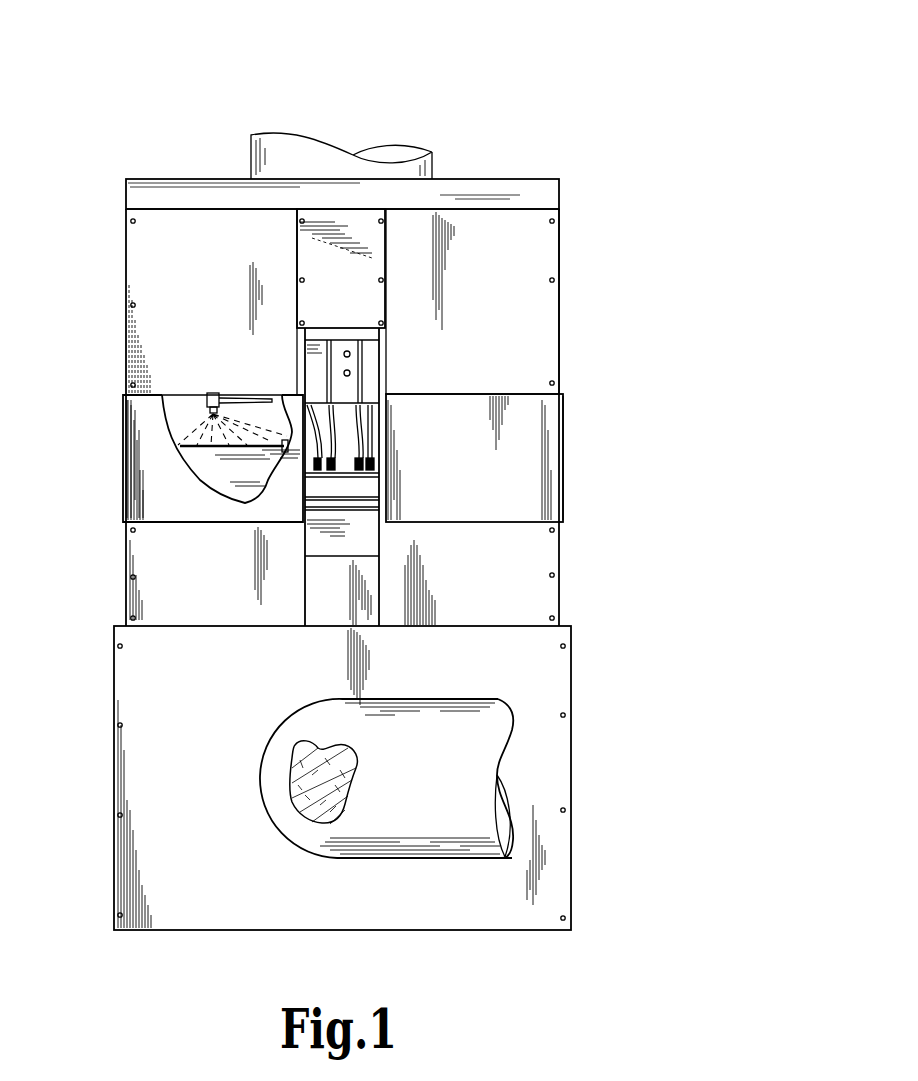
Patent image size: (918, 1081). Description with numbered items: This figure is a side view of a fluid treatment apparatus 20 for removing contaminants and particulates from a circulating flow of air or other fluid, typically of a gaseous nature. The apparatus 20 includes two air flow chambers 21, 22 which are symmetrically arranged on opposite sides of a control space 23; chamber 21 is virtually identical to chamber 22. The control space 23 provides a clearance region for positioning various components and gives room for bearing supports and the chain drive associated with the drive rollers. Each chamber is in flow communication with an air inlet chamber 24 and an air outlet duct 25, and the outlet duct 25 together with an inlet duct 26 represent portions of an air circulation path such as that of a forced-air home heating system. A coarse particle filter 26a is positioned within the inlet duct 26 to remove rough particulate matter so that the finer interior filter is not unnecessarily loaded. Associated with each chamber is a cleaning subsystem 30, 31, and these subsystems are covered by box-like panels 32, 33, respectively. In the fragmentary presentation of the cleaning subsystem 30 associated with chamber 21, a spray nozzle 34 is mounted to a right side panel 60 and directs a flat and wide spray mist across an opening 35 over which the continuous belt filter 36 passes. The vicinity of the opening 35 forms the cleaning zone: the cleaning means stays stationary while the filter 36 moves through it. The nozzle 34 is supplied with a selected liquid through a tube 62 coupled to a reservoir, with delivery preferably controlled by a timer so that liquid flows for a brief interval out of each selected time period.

The fluid treatment apparatus 20 is at (579, 74).
The air flow chamber 21 is at (132, 252).
The air flow chamber 22 is at (545, 343).
The control space 23 is at (363, 412).
The air inlet chamber 24 is at (132, 785).
The air outlet duct 25 is at (290, 148).
The inlet duct 26 is at (400, 856).
The coarse particle filter 26a is at (303, 812).
The cleaning subsystem 30 is at (148, 486).
The cleaning subsystem 31 is at (538, 468).
The box-like panel 32 is at (135, 437).
The box-like panel 33 is at (548, 503).
The spray nozzle 34 is at (210, 395).
The opening 35 is at (203, 450).
The continuous belt filter 36 is at (237, 463).
The right side panel 60 is at (188, 218).
The tube 62 is at (238, 395).